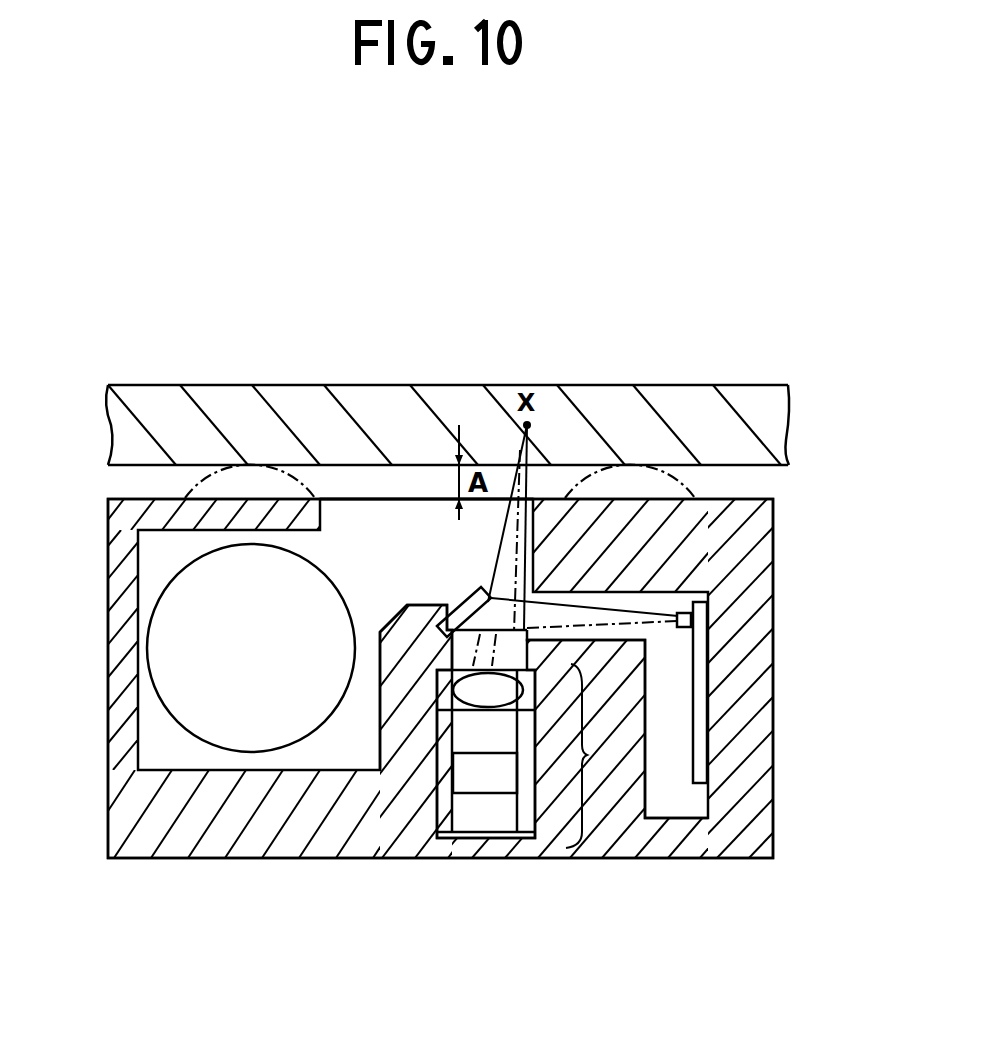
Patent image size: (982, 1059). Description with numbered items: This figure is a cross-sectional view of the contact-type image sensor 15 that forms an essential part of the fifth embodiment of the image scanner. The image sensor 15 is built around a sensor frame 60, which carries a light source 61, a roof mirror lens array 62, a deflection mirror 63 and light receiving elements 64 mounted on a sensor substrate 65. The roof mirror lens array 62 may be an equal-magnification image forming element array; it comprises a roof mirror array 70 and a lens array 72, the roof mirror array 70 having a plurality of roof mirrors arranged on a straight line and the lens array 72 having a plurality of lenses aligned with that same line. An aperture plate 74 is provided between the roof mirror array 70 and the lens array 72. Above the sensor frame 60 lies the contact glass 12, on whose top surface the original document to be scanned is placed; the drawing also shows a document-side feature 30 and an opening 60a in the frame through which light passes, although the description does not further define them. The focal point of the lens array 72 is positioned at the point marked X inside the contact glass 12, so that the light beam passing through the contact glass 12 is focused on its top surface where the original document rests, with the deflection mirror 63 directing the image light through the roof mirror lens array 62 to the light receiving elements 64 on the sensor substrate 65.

The contact glass 12 is at (208, 400).
The image sensor 15 is at (778, 593).
The original document 30 is at (200, 490).
The sensor frame 60 is at (117, 833).
The opening 60a is at (347, 517).
The light source 61 is at (216, 722).
The roof mirror lens array (RMLA) 62 is at (590, 760).
The deflection mirror 63 is at (466, 590).
The light receiving elements 64 is at (685, 628).
The sensor substrate 65 is at (698, 743).
The roof mirror array 70 is at (460, 823).
The lens array 72 is at (477, 687).
The aperture plate 74 is at (498, 737).